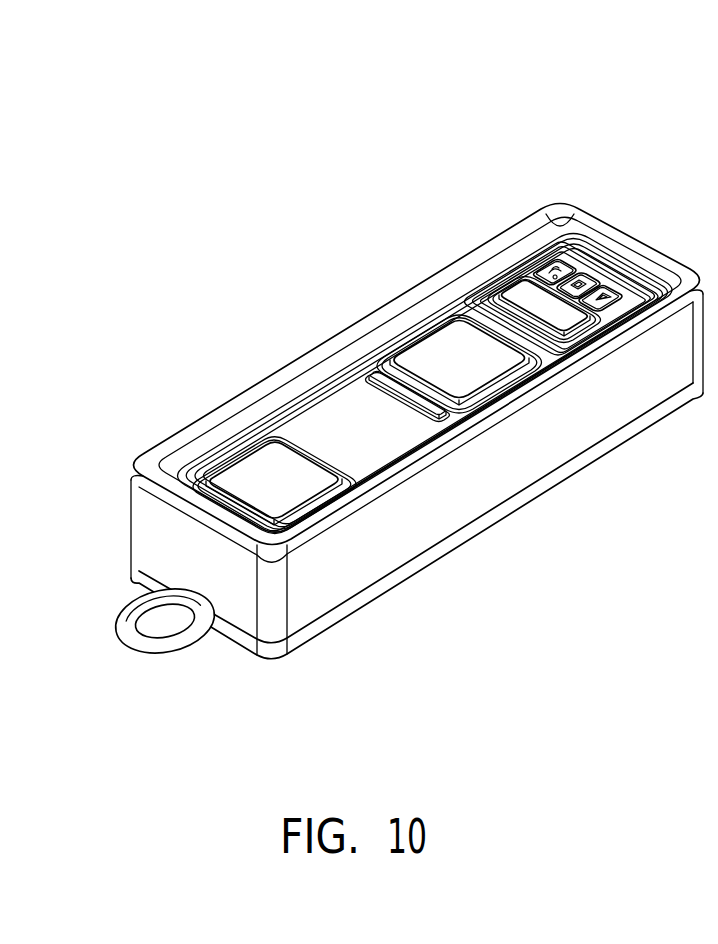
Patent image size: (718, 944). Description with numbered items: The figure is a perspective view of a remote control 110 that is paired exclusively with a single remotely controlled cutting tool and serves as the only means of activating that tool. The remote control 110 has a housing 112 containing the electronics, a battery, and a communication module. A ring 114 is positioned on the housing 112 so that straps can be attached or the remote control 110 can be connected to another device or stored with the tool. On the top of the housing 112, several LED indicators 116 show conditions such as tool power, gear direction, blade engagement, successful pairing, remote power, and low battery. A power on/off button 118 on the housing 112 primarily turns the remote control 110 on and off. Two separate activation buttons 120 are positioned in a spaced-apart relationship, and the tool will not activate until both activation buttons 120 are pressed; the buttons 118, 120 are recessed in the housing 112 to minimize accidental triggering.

The remote control 110 is at (406, 391).
The housing 112 is at (627, 445).
The ring 114 is at (178, 649).
The LED indicators 116 is at (603, 262).
The power on/off button 118 is at (512, 291).
The activation buttons 120 is at (488, 612).